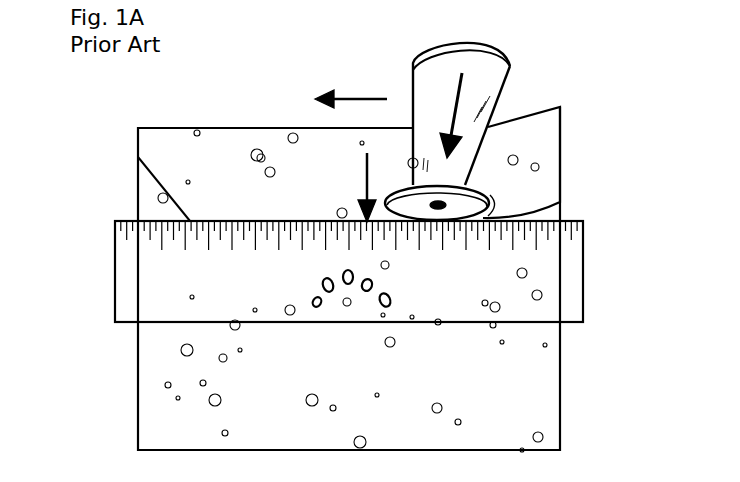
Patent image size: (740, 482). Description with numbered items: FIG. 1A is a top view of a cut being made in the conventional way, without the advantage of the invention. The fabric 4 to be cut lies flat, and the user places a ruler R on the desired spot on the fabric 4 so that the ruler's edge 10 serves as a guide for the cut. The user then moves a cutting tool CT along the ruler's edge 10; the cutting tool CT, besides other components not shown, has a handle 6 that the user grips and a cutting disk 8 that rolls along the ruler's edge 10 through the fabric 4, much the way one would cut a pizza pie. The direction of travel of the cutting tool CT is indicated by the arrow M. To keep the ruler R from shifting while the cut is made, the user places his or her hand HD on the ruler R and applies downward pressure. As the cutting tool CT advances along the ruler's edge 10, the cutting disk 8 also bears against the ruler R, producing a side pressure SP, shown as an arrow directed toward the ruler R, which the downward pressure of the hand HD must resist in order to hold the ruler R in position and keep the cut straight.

The fabric 4 is at (525, 392).
The handle 6 is at (478, 88).
The cutting disk 8 is at (472, 203).
The ruler's edge 10 is at (138, 157).
The cutting tool CT is at (512, 42).
The feed direction M is at (366, 97).
The side pressure SP is at (365, 183).
The ruler R is at (105, 230).
The hand HD is at (313, 303).